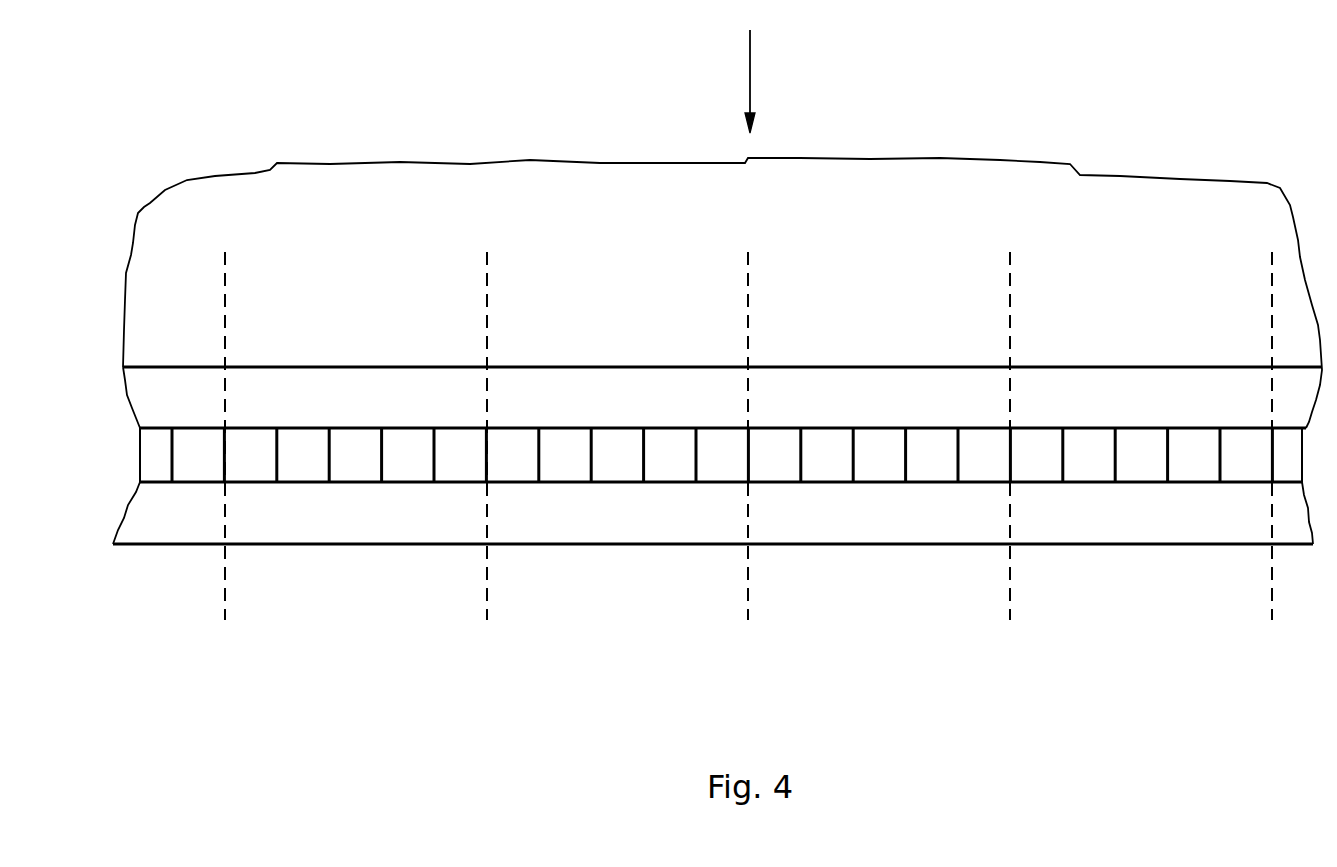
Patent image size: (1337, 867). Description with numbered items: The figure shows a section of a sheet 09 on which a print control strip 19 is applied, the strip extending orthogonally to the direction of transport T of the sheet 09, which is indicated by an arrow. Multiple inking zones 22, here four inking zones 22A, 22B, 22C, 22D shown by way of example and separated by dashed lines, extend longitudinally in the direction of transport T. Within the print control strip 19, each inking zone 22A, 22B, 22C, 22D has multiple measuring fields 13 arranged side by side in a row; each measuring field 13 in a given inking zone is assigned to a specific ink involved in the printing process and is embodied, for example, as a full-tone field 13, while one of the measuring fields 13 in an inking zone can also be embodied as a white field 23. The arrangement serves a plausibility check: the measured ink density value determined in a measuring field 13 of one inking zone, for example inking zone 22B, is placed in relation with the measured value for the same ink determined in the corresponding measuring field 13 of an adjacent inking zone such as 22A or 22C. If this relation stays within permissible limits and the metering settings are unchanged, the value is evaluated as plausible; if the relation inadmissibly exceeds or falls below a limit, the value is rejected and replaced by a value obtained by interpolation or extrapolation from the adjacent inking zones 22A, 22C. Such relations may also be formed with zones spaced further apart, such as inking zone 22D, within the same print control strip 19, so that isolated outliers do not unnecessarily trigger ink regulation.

The sheet 09 is at (763, 217).
The print control strip 19 is at (192, 410).
The measuring field 13 is at (303, 460).
The white field 23 is at (447, 460).
The inking zone 22 is at (365, 572).
The inking zone 22A is at (368, 279).
The inking zone 22B is at (633, 279).
The inking zone 22C is at (910, 279).
The inking zone 22D is at (1172, 279).
The direction of transport T is at (752, 55).